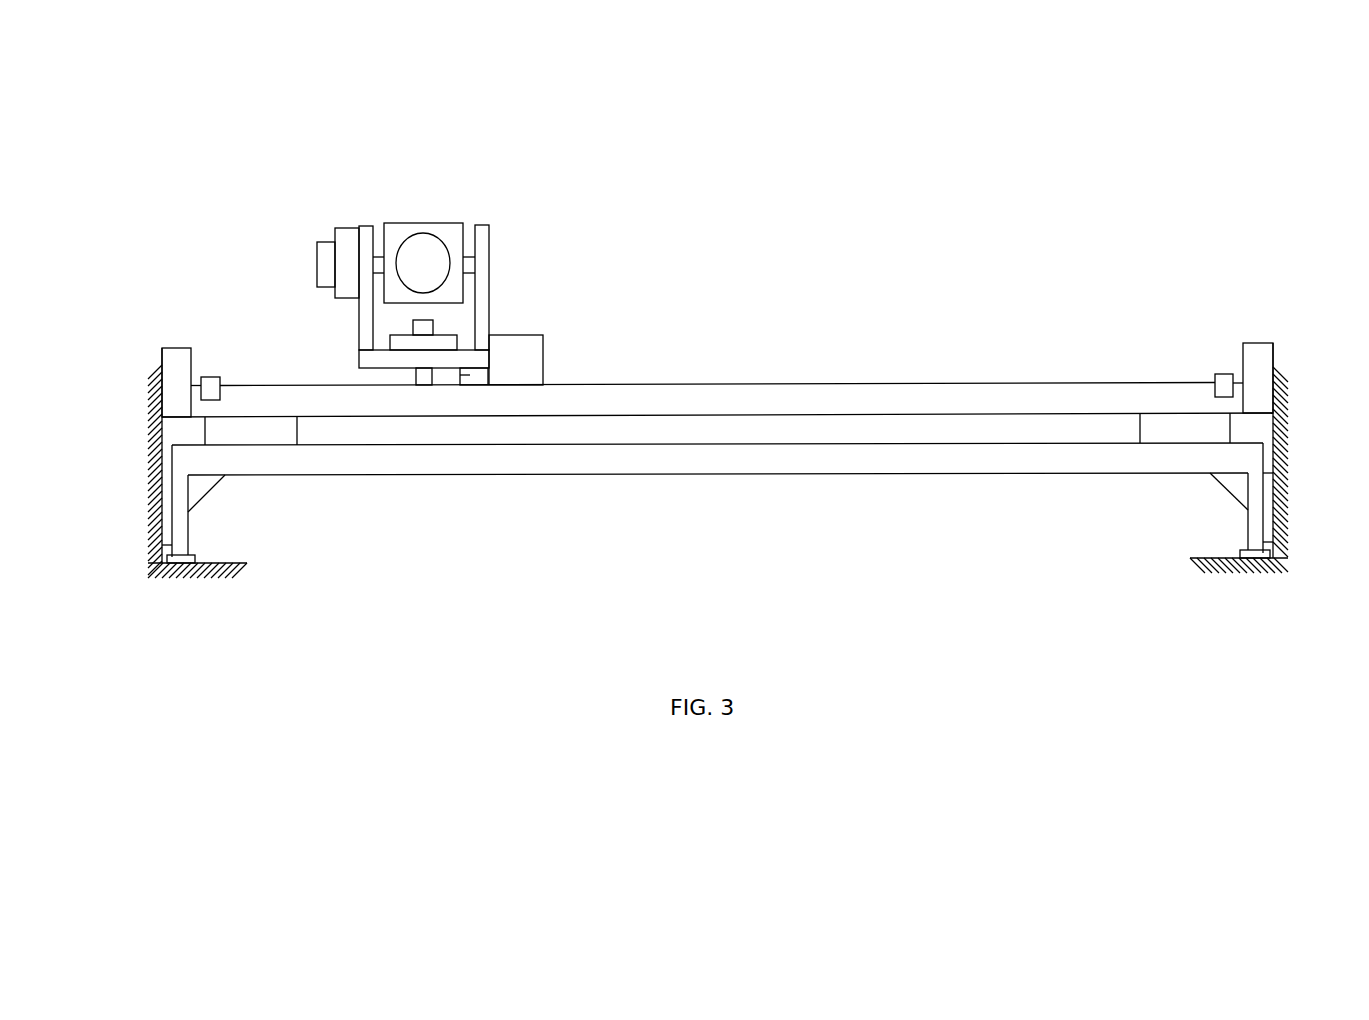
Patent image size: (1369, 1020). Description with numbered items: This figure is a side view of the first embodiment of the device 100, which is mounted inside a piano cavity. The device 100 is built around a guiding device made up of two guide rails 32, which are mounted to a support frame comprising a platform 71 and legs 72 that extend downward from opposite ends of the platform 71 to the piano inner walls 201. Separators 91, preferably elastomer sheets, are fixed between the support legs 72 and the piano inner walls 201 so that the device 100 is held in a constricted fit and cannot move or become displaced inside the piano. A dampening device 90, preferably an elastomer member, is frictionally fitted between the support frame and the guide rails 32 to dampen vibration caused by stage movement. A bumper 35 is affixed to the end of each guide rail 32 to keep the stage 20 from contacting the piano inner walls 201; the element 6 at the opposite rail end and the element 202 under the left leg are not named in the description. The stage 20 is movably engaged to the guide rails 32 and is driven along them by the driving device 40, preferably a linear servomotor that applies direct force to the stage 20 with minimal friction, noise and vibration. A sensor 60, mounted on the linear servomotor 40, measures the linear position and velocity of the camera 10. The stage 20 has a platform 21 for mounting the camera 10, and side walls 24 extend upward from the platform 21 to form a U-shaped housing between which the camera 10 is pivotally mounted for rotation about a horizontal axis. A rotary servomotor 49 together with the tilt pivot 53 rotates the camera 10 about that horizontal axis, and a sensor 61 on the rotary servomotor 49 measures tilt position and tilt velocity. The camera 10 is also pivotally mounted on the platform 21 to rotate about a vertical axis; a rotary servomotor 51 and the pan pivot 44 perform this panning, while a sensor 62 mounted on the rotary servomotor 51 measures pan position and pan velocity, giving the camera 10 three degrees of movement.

The stage 20 is at (640, 138).
The camera 10 is at (412, 223).
The tilt pivot 53 is at (468, 253).
The rotary servomotor 49 is at (342, 228).
The sensor 61 is at (322, 260).
The side walls 24 is at (483, 267).
The sensor 62 is at (435, 330).
The rotary servomotor 51 is at (397, 345).
The platform 21 is at (395, 360).
The driving device 40 is at (542, 373).
The pan pivot 44 is at (418, 373).
The sensor 60 is at (467, 372).
The bumper 35 is at (182, 358).
The right end block 6 is at (1217, 374).
The guide rails 32 is at (1060, 382).
The platform 71 is at (723, 462).
The dampening device 90 is at (233, 428).
The separators 91 is at (168, 527).
The legs 72 is at (180, 540).
The piano inner walls 201 is at (155, 372).
The floor 202 is at (218, 565).
The device 100 is at (888, 546).